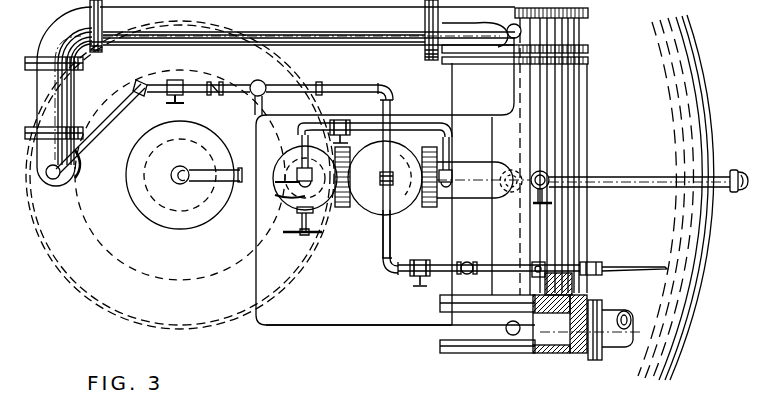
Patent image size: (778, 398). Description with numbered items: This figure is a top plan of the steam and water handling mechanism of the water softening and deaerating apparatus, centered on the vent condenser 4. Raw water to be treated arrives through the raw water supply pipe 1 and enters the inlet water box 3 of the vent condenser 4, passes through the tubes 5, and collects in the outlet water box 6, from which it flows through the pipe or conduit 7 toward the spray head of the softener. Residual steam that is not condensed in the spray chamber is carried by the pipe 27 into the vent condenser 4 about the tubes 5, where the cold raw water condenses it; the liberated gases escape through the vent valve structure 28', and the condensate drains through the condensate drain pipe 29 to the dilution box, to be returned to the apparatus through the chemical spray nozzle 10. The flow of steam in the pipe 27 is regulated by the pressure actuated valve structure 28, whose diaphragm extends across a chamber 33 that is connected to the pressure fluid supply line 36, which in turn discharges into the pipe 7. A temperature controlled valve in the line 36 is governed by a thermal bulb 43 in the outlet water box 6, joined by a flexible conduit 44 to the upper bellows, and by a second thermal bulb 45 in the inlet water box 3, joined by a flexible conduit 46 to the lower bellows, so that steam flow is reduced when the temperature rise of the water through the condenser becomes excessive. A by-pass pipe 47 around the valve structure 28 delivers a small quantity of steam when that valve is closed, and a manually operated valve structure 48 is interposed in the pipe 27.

The raw water supply pipe 1 is at (607, 347).
The inlet water box 3 is at (550, 332).
The vent condenser 4 is at (550, 137).
The tubes 5 is at (575, 293).
The outlet water box 6 is at (568, 33).
The pipe or conduit 7 is at (305, 38).
The chemical spray nozzle 10 is at (201, 201).
The pipe 27 is at (312, 192).
The pressure actuated valve structure 28 is at (364, 245).
The vent valve structure 28' is at (576, 199).
The condensate drain pipe 29 is at (641, 181).
The chamber 33 is at (394, 182).
The pressure fluid supply line 36 is at (392, 110).
The thermal bulb 43 is at (523, 32).
The flexible conduit 44 is at (517, 100).
The thermal bulb 45 is at (512, 335).
The flexible conduit 46 is at (288, 326).
The by-pass pipe 47 is at (318, 125).
The manually operated valve structure 48 is at (297, 233).